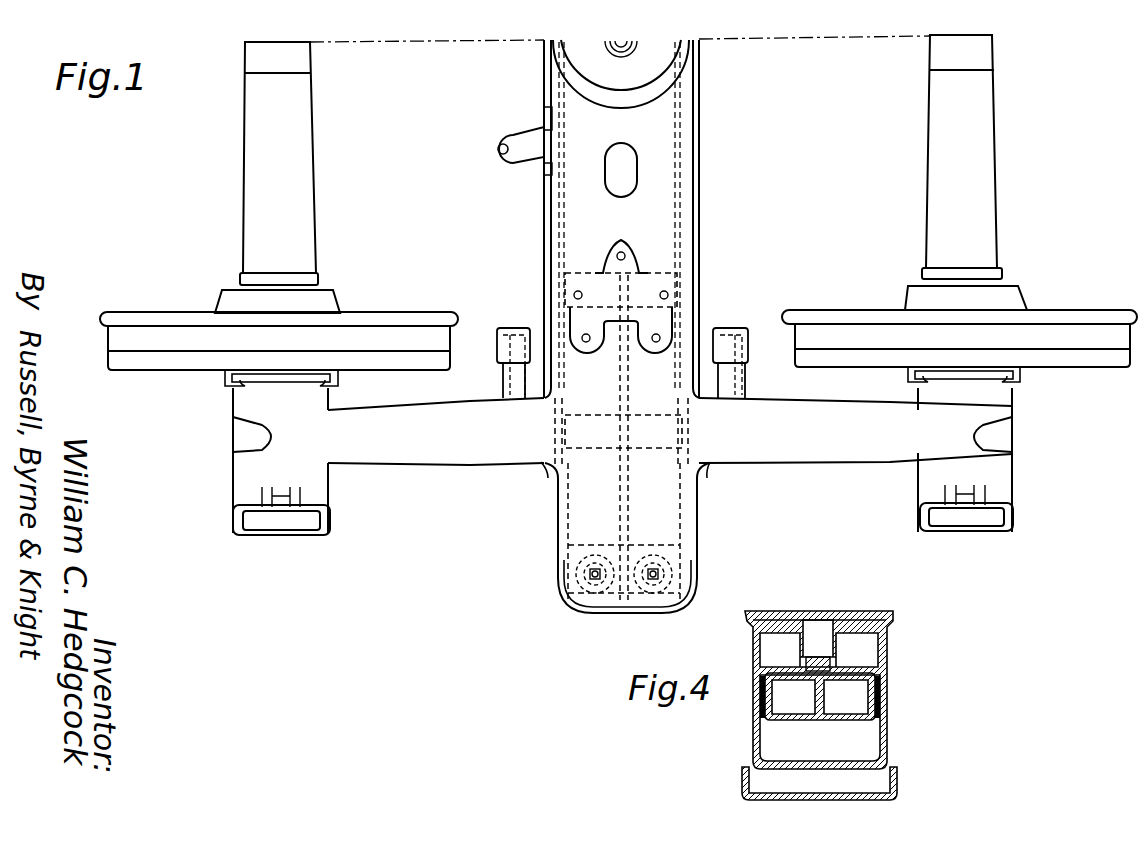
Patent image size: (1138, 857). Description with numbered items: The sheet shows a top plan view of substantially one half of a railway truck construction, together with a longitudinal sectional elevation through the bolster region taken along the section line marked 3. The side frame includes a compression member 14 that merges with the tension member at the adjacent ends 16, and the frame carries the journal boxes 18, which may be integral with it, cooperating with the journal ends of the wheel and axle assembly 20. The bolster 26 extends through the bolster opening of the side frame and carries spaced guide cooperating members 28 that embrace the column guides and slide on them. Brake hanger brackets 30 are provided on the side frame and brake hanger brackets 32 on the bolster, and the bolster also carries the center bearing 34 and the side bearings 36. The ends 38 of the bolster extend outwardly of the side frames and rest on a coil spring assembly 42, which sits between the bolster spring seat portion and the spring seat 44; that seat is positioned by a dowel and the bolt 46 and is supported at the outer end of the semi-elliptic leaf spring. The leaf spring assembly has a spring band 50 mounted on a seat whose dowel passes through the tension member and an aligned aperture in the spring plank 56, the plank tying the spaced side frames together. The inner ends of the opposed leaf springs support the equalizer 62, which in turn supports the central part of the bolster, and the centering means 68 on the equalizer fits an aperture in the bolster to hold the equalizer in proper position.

In FIG. 1, the section line 3- 3 is at (621, 640).
In FIG. 1, the compression member 14 is at (640, 407).
In FIG. 1, the merging ends 16 is at (371, 418).
In FIG. 1, the journal box 18 is at (238, 513).
In FIG. 1, the wheel and axle assembly 20 is at (373, 326).
In FIG. 4, the bolster 26 is at (888, 738).
In FIG. 1, the guide cooperating members 28 is at (550, 473).
In FIG. 1, the brake hanger bracket 30 is at (505, 328).
In FIG. 1, the brake hanger bracket 32 is at (510, 160).
In FIG. 1, the center bearing 34 is at (660, 68).
In FIG. 4, the center bearing 34 is at (880, 620).
In FIG. 1, the side bearing 36 is at (665, 282).
In FIG. 1, the bolster end 38 is at (670, 513).
In FIG. 1, the coil spring assembly 42 is at (640, 600).
In FIG. 1, the spring seat 44 is at (590, 600).
In FIG. 1, the bolt 46 is at (595, 570).
In FIG. 1, the spring band 50 is at (656, 452).
In FIG. 1, the spring plank 56 is at (699, 210).
In FIG. 4, the spring plank 56 is at (898, 780).
In FIG. 4, the equalizer 62 is at (822, 704).
In FIG. 4, the centering means 68 is at (838, 662).